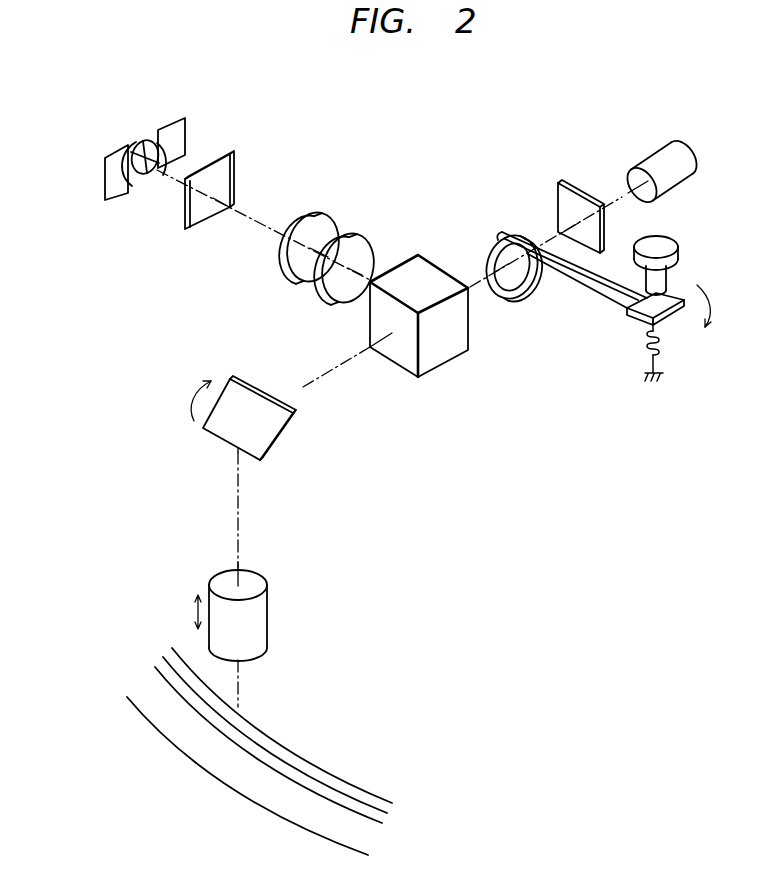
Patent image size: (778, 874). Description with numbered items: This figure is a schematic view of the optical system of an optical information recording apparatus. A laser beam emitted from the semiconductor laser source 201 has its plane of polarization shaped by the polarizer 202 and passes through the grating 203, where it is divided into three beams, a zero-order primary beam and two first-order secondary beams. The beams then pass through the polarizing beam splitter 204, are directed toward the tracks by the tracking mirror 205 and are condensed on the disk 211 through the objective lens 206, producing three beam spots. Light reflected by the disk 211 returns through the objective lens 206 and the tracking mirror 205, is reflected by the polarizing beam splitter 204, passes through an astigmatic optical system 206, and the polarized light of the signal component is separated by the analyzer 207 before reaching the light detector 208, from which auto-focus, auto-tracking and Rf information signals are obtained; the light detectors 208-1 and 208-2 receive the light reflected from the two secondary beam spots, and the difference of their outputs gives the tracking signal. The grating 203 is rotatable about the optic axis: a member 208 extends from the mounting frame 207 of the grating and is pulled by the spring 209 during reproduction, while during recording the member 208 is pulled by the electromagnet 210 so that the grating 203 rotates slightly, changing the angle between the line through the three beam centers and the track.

The semiconductor laser source 201 is at (666, 151).
The polarizer 202 is at (569, 183).
The grating 203 is at (500, 247).
The polarizing beam splitter 204 is at (447, 360).
The tracking mirror 205 is at (280, 440).
The objective lens 206 is at (318, 201).
The analyzer 207 is at (234, 171).
The light detector 208 is at (181, 112).
The light detector 208-1 is at (186, 138).
The light detector 208-2 is at (116, 199).
The spring 209 is at (661, 345).
The electromagnet 210 is at (679, 252).
The disk 211 is at (282, 738).